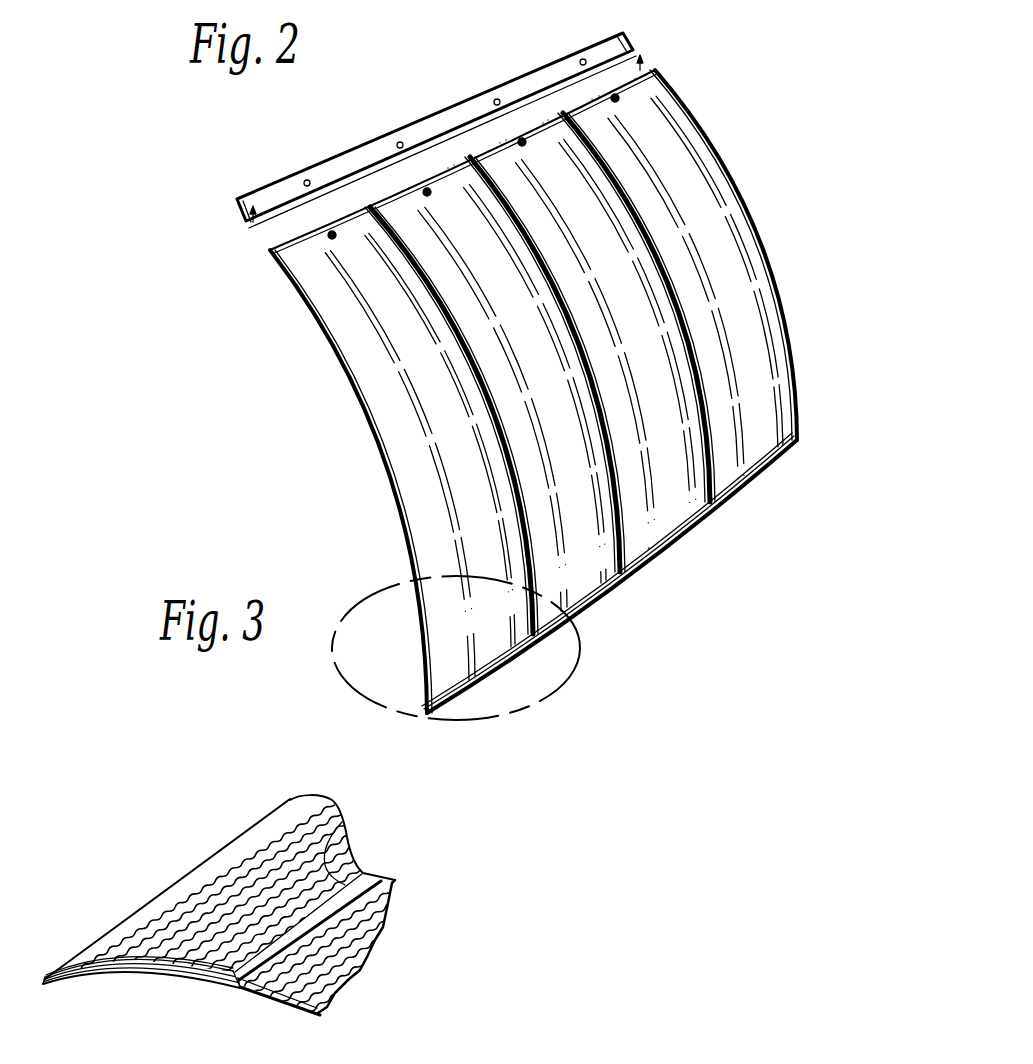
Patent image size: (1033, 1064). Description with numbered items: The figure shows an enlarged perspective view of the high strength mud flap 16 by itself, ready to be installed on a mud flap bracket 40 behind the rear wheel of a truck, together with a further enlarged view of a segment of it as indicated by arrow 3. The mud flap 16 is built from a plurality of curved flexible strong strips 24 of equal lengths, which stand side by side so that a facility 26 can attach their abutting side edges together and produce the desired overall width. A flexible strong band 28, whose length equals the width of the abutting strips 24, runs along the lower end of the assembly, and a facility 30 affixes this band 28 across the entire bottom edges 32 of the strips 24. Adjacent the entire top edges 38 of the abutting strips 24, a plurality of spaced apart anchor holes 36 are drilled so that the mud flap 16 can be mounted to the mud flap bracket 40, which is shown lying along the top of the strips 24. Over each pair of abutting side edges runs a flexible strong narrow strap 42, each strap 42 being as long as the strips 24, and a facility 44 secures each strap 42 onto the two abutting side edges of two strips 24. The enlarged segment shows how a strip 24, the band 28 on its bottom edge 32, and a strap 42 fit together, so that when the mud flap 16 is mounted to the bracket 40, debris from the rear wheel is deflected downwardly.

In FIG. 2, the high strength mud flap 16 is at (552, 373).
In FIG. 3, the high strength mud flap 16 is at (318, 868).
In FIG. 2, the curved flexible strong strip 24 is at (778, 296).
In FIG. 3, the curved flexible strong strip 24 is at (162, 873).
In FIG. 3, the facility for attaching abutting side edges 26 is at (232, 997).
In FIG. 2, the flexible strong band 28 is at (667, 552).
In FIG. 3, the flexible strong band 28 is at (120, 973).
In FIG. 2, the facility for affixing the flexible strong band 30 is at (763, 445).
In FIG. 3, the facility for affixing the flexible strong band 30 is at (104, 950).
In FIG. 3, the bottom edges 32 is at (264, 994).
In FIG. 2, the anchor holes 36 is at (330, 240).
In FIG. 2, the top edges 38 is at (618, 94).
In FIG. 2, the mud flap bracket 40 is at (440, 120).
In FIG. 2, the flexible strong narrow strap 42 is at (470, 368).
In FIG. 3, the flexible strong narrow strap 42 is at (340, 818).
In FIG. 2, the facility for securing each narrow strap 44 is at (500, 465).
In FIG. 3, the facility for securing each narrow strap 44 is at (302, 900).
In FIG. 2, the arrow 3 is at (598, 651).